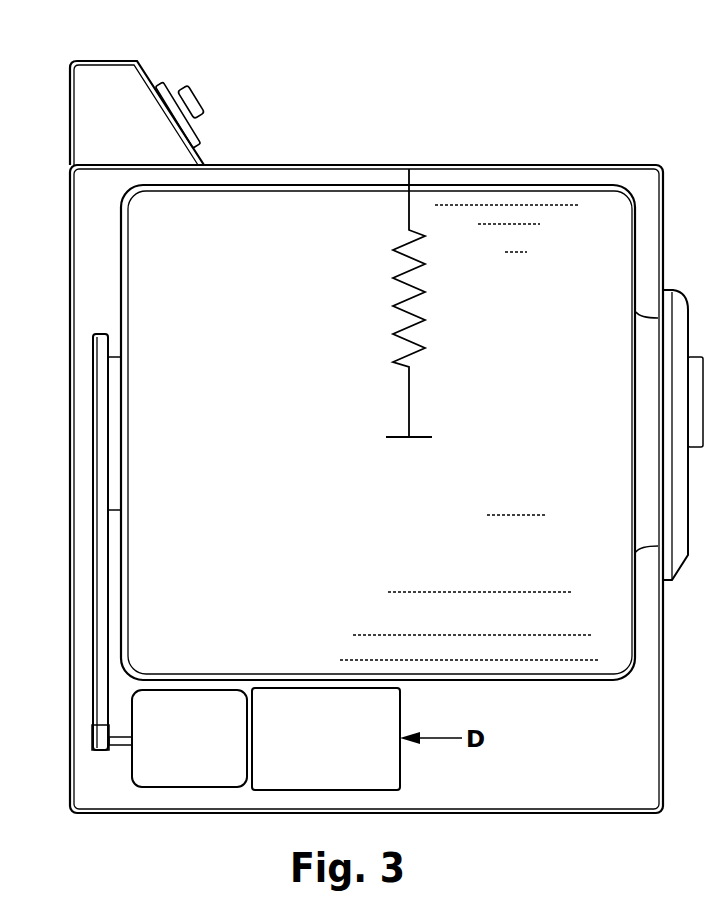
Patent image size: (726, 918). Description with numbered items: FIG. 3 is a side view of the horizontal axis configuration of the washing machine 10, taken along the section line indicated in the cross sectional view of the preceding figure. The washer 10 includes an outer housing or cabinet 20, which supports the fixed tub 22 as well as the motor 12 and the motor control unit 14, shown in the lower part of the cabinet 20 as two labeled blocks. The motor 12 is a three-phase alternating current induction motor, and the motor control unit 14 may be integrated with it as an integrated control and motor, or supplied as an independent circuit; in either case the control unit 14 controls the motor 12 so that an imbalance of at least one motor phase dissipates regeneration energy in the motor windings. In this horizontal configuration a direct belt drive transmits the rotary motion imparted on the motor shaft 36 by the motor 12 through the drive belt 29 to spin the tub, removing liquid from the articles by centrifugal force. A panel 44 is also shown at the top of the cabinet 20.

The washing machine 10 is at (331, 116).
The motor 12 is at (205, 768).
The motor control unit 14 is at (342, 768).
The outer housing or cabinet 20 is at (70, 455).
The fixed tub 22 is at (515, 681).
The drive belt 29 is at (102, 398).
The motor shaft 36 is at (120, 746).
The control panel 44 is at (135, 133).